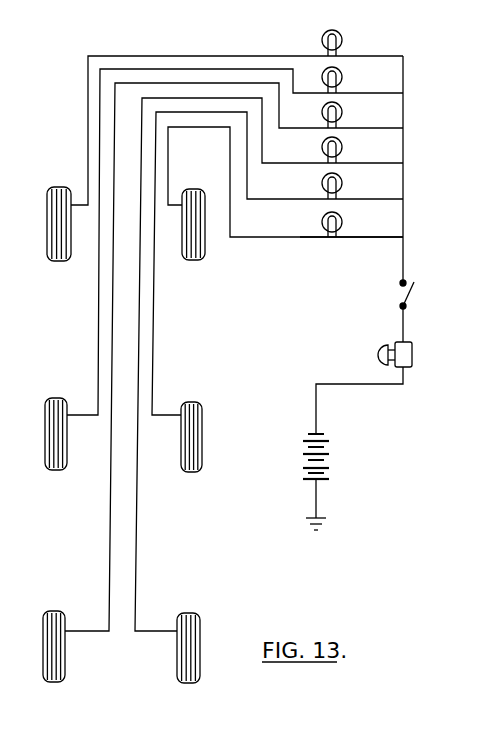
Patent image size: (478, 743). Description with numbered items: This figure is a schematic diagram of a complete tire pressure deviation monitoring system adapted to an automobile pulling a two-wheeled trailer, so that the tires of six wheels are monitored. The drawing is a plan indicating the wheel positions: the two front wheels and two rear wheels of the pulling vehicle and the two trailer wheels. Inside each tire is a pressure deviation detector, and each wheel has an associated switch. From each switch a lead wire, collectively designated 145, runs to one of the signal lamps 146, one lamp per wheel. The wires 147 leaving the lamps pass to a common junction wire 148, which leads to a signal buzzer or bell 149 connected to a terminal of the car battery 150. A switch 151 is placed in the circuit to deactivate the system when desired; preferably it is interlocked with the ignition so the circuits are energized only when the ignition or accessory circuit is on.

The lead wires 145 is at (81, 89).
The signal lamps 146 is at (349, 38).
The wires from the lamps 147 is at (357, 252).
The junction wire 148 is at (405, 258).
The switch 151 is at (410, 297).
The signal buzzer or bell 149 is at (413, 356).
The car battery 150 is at (331, 456).